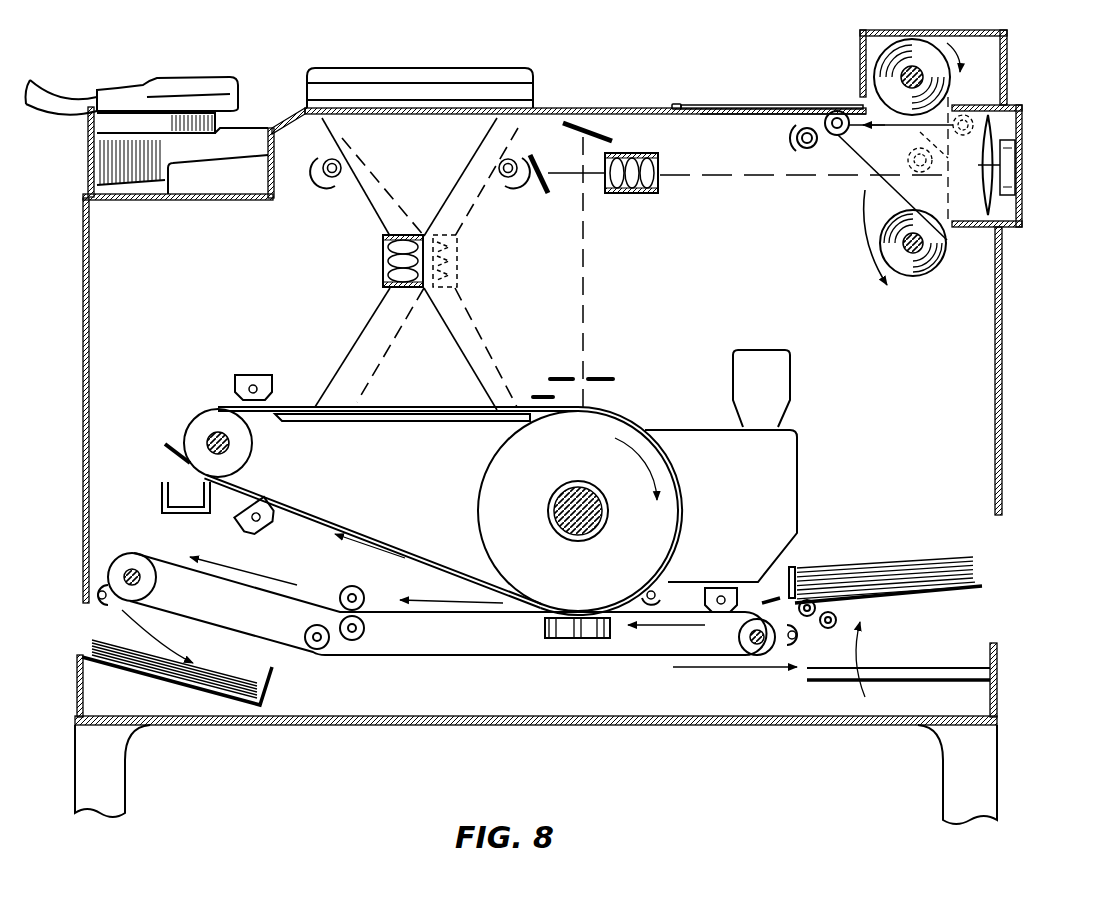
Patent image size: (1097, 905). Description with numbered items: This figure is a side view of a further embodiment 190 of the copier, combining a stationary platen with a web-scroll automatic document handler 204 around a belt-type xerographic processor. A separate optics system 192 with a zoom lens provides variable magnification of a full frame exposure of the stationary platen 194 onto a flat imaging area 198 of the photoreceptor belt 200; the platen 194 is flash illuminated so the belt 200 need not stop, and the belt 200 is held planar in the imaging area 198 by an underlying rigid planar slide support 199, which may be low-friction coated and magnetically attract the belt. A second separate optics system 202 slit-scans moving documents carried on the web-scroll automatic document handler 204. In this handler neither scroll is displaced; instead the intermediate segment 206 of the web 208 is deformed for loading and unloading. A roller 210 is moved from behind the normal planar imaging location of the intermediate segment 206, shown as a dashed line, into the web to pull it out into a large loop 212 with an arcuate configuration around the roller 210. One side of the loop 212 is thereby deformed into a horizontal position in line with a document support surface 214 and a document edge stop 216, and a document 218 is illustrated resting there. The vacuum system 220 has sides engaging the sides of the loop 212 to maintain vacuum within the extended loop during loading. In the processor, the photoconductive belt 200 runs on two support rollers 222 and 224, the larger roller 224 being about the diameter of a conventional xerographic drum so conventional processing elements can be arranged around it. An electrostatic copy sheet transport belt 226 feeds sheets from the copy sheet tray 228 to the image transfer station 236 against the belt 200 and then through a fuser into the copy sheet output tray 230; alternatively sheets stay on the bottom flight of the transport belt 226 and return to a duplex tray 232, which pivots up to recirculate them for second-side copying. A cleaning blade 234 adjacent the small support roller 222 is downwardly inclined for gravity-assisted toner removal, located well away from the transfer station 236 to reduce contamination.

The further embodiment 190 is at (567, 60).
The separate optics system 192 is at (470, 255).
The stationary platen 194 is at (405, 120).
The flat imaging area 198 is at (443, 356).
The rigid planar slide support 199 is at (430, 424).
The photoreceptor belt 200 is at (330, 515).
The separate optics system 202 is at (602, 207).
The web-scroll automatic document handler 204 is at (858, 187).
The intermediate segment 206 is at (828, 140).
The web 208 is at (963, 253).
The roller 210 is at (834, 112).
The large loop 212 is at (863, 162).
The document support surface 214 is at (753, 117).
The document edge stop 216 is at (677, 104).
The document 218 is at (745, 105).
The vacuum system 220 is at (1003, 212).
The small support roller 222 is at (243, 452).
The support roller 224 is at (490, 500).
The electrostatic copy sheet transport belt 226 is at (340, 592).
The copy sheet tray 228 is at (970, 593).
The copy sheet output tray 230 is at (125, 668).
The duplex tray 232 is at (905, 678).
The cleaning blade 234 is at (167, 452).
The image transfer station 236 is at (537, 630).